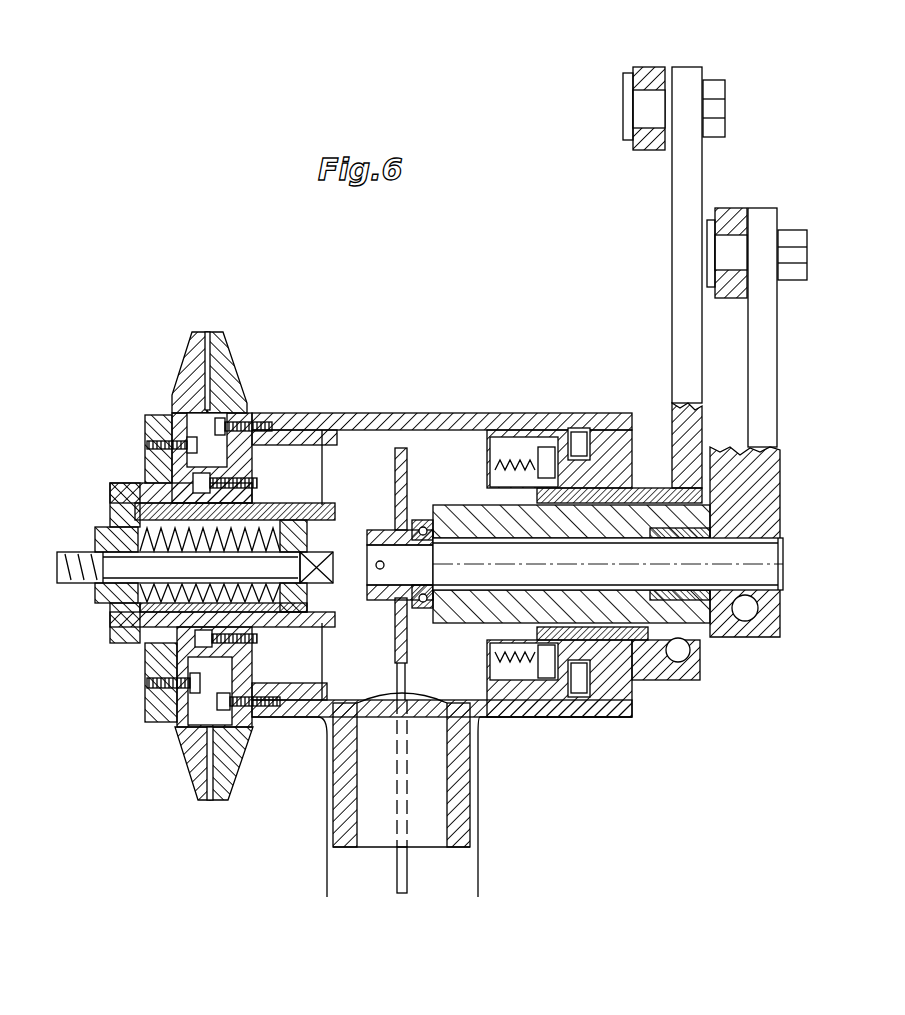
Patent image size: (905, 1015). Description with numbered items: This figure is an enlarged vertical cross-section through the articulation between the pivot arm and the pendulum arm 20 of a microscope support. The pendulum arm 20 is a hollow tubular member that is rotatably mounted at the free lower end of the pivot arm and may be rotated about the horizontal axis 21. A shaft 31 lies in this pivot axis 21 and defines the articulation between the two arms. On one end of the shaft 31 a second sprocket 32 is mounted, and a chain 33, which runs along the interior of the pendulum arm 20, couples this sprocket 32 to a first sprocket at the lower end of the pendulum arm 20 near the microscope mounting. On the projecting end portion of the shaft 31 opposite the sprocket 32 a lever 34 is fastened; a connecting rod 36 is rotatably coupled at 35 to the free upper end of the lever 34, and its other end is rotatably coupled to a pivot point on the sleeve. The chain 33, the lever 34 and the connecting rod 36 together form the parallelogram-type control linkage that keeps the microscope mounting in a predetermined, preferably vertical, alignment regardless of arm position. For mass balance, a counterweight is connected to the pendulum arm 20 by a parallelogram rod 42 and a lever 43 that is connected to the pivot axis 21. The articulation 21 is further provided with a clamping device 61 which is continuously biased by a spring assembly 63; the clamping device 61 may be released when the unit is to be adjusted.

The pendulum arm 20 is at (462, 815).
The horizontal axis 21 is at (638, 608).
The shaft 31 is at (728, 575).
The second sprocket 32 is at (405, 470).
The chain 33 is at (407, 832).
The lever 34 is at (752, 358).
The rotatable coupling 35 is at (734, 298).
The connecting rod 36 is at (736, 208).
The parallelogram rod 42 is at (644, 67).
The lever 43 is at (680, 268).
The clamping device 61 is at (228, 370).
The spring assembly 63 is at (112, 620).